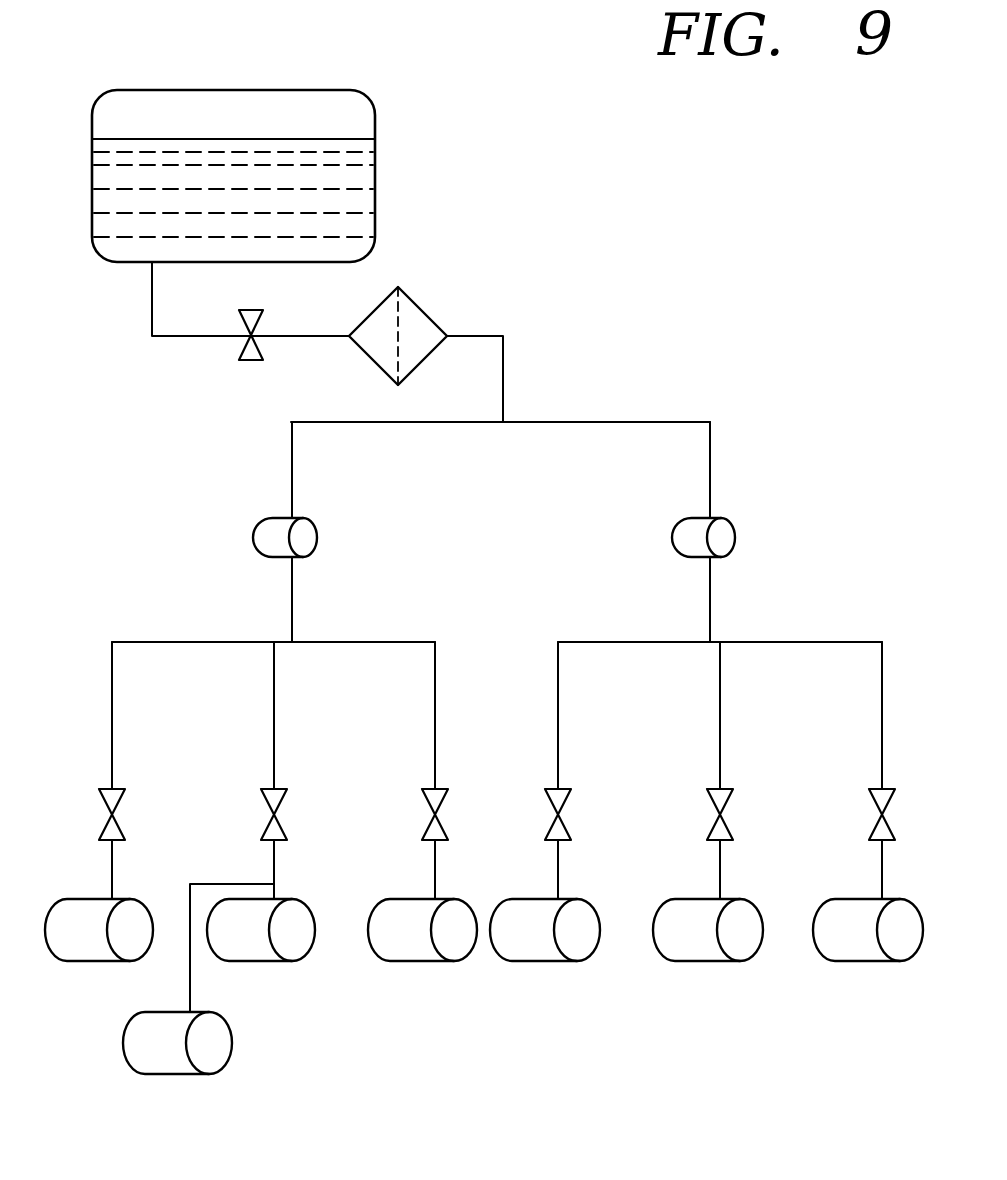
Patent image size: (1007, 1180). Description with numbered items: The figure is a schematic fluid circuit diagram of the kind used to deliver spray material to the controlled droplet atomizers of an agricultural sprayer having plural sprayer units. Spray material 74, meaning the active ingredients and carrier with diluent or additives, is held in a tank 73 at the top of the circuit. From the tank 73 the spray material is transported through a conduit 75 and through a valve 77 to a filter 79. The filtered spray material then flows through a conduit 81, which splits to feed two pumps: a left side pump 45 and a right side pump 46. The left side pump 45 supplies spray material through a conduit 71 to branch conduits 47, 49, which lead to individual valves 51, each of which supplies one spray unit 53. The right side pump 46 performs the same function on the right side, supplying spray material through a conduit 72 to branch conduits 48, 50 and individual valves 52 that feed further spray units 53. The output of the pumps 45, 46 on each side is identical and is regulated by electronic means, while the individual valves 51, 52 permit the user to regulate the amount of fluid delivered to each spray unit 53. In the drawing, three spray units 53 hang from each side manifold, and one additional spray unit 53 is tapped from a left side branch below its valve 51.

The tank 73 is at (300, 90).
The spray material 74 is at (217, 139).
The conduit 75 is at (151, 323).
The valve 77 is at (249, 310).
The filter 79 is at (425, 312).
The conduit 81 is at (583, 422).
The left side pump 45 is at (253, 537).
The right side pump 46 is at (672, 537).
The conduit 71 is at (292, 615).
The conduit 72 is at (710, 615).
The branch conduit 47 is at (172, 642).
The branch conduit 48 is at (590, 642).
The branch conduit 49 is at (112, 757).
The branch conduit 50 is at (558, 757).
The individual valve 51 is at (112, 815).
The individual valve 52 is at (558, 815).
The spray unit 53 is at (85, 962).